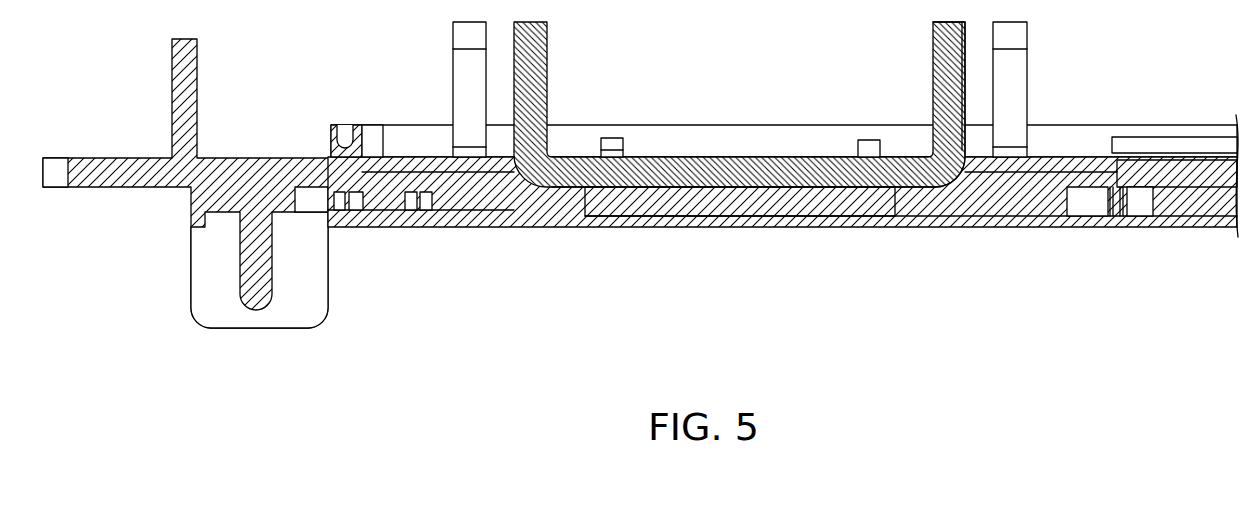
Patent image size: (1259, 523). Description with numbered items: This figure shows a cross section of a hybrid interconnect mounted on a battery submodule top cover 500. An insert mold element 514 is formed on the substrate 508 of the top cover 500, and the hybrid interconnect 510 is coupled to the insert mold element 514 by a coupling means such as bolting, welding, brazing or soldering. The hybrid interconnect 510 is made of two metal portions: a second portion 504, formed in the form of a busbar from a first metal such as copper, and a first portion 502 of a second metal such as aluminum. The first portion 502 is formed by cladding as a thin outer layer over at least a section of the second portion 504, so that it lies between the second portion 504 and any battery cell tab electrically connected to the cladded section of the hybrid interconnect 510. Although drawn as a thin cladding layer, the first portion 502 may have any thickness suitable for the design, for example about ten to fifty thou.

The battery submodule top cover 500 is at (920, 298).
The first portion 502 is at (942, 188).
The second portion 504 is at (533, 60).
The substrate 508 is at (498, 213).
The hybrid interconnect 510 is at (703, 190).
The insert mold element 514 is at (803, 195).